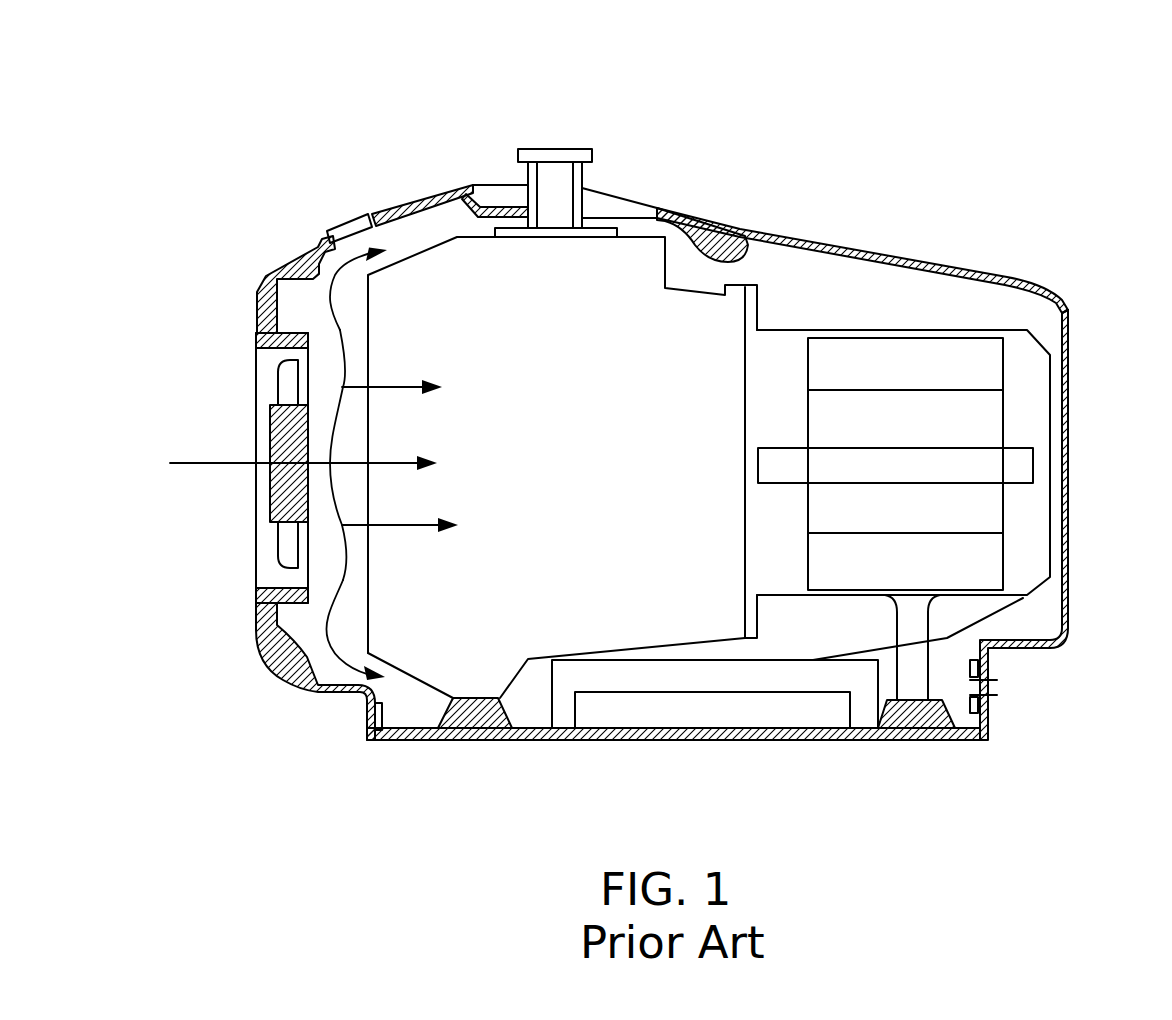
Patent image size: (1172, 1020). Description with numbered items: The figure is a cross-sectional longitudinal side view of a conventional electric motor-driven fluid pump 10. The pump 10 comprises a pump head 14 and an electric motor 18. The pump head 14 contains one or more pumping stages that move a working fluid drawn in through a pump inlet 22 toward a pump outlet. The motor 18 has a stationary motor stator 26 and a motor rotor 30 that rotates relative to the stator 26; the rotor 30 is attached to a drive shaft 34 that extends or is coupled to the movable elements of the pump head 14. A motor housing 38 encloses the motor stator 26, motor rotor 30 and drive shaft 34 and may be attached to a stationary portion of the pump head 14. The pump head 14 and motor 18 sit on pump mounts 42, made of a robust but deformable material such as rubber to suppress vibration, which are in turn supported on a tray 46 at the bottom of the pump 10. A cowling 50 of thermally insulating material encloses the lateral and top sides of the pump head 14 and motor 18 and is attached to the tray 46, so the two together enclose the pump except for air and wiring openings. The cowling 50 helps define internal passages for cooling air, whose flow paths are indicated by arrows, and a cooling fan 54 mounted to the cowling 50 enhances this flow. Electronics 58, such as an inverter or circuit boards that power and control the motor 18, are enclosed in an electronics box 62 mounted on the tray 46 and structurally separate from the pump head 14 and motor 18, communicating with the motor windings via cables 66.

The electric motor-driven fluid pump 10 is at (258, 155).
The pump head 14 is at (447, 237).
The electric motor 18 is at (811, 282).
The pump inlet 22 is at (585, 173).
The motor stator 26 is at (928, 368).
The motor rotor 30 is at (960, 417).
The drive shaft 34 is at (1015, 468).
The motor housing 38 is at (772, 330).
The pump mounts 42 is at (470, 737).
The tray 46 is at (397, 737).
The cowling 50 is at (405, 196).
The cooling fan 54 is at (278, 457).
The electronics 58 is at (633, 713).
The electronics box 62 is at (550, 692).
The cables 66 is at (947, 638).